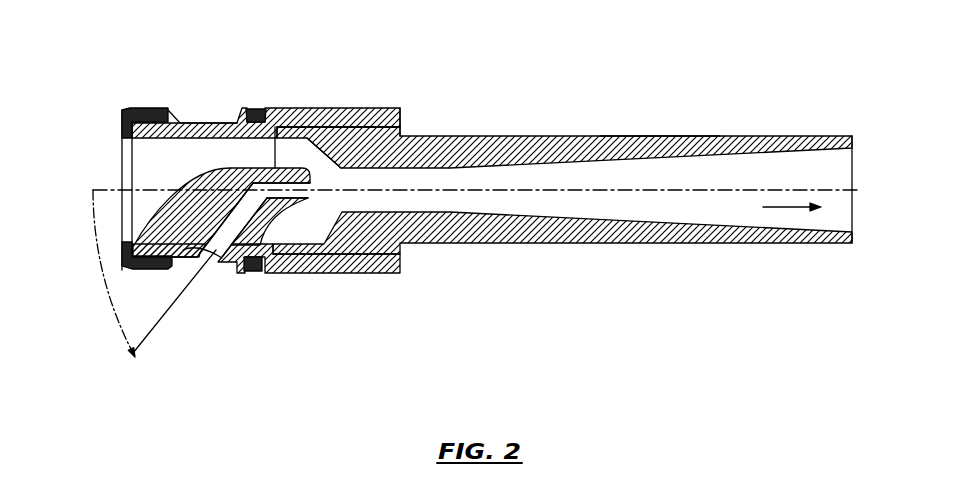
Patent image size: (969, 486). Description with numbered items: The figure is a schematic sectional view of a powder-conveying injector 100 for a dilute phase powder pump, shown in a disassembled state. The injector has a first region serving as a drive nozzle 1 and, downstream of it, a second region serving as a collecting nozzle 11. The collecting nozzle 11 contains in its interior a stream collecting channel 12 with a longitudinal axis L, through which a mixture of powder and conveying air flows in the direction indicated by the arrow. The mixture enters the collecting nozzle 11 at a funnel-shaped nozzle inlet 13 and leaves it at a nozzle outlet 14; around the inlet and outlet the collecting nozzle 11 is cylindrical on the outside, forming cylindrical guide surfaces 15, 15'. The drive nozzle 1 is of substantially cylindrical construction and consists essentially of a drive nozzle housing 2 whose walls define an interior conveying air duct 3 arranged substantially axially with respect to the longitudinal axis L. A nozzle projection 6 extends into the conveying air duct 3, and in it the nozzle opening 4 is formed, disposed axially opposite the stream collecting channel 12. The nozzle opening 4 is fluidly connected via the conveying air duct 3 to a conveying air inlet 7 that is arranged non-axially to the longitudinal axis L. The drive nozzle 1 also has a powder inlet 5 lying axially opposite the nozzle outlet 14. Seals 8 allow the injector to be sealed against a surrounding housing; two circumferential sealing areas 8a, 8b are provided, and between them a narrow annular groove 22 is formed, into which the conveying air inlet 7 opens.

The drive nozzle 1 is at (373, 110).
The drive nozzle housing 2 is at (362, 272).
The conveying air duct 3 is at (216, 250).
The nozzle opening 4 is at (305, 200).
The powder inlet 5 is at (123, 178).
The nozzle projection 6 is at (271, 188).
The conveying air inlet 7 is at (216, 250).
The seals 8 is at (146, 159).
The first circumferential sealing area 8a is at (128, 113).
The second circumferential sealing area 8b is at (252, 112).
The collecting nozzle 11 is at (458, 166).
The stream collecting channel 12 is at (555, 173).
The nozzle inlet 13 is at (295, 128).
The nozzle outlet 14 is at (820, 139).
The cylindrical guide surface 15 is at (392, 124).
The cylindrical guide surface 15' is at (684, 108).
The annular groove 22 is at (218, 123).
The powder-conveying injector 100 is at (779, 53).
The longitudinal axis L is at (697, 190).